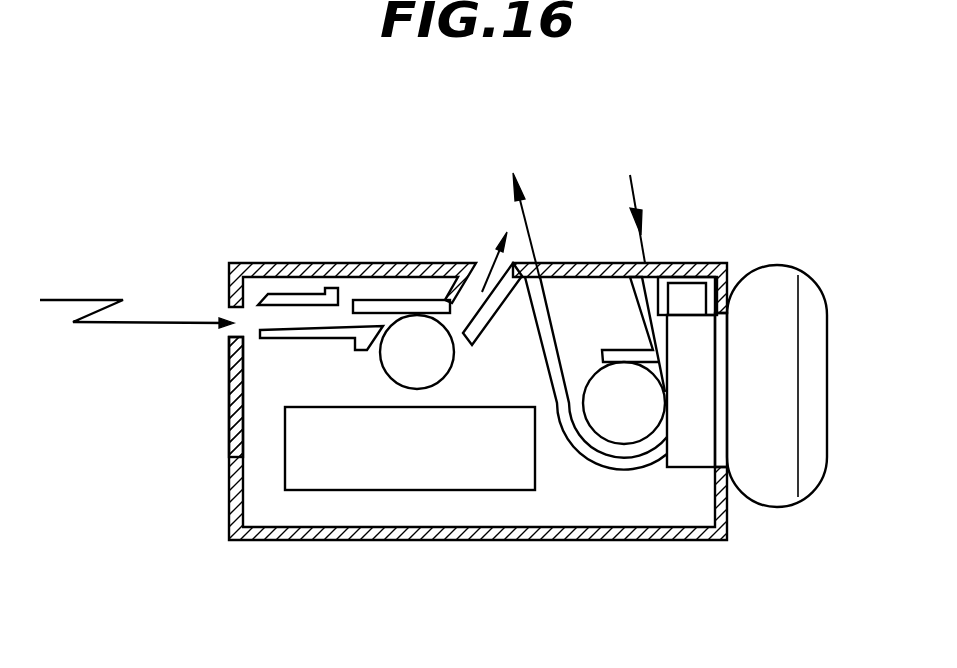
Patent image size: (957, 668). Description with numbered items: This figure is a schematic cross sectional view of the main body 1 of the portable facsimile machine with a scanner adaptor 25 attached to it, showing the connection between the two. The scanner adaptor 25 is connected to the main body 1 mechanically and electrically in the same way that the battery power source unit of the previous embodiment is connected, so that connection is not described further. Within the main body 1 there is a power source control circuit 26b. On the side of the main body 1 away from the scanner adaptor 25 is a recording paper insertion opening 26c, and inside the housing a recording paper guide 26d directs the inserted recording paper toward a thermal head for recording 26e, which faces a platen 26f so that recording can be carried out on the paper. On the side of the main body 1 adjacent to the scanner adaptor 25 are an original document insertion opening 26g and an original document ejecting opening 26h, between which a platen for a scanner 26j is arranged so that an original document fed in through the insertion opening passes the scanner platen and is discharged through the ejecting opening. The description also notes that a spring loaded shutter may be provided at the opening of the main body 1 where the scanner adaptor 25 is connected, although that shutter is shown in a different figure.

The main body 1 is at (409, 558).
The scanner adaptor 25 is at (772, 302).
The power source control circuit 26b is at (320, 493).
The recording paper insertion opening 26c is at (218, 340).
The recording paper guide 26d is at (257, 263).
The thermal head for recording 26e is at (423, 300).
The platen 26f is at (402, 338).
The original document insertion opening 26g is at (652, 262).
The original document ejecting opening 26h is at (553, 263).
The platen for a scanner 26j is at (630, 430).